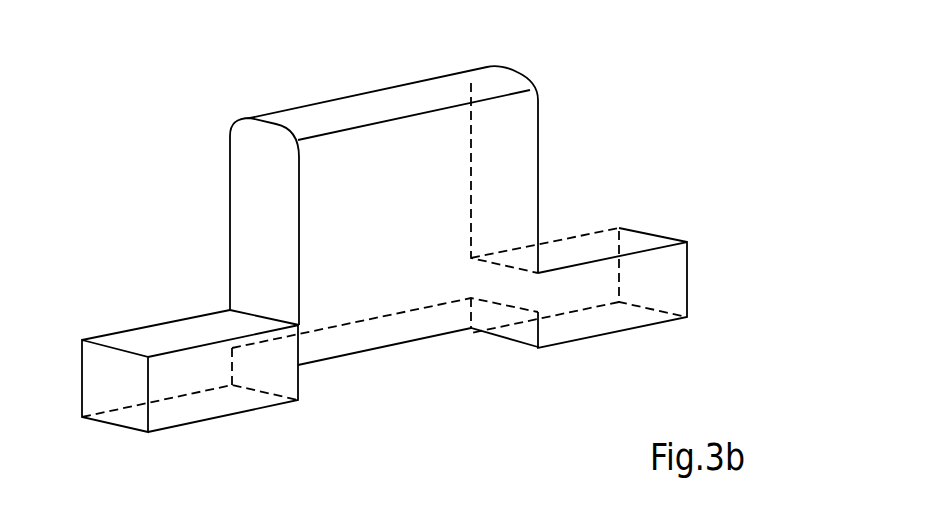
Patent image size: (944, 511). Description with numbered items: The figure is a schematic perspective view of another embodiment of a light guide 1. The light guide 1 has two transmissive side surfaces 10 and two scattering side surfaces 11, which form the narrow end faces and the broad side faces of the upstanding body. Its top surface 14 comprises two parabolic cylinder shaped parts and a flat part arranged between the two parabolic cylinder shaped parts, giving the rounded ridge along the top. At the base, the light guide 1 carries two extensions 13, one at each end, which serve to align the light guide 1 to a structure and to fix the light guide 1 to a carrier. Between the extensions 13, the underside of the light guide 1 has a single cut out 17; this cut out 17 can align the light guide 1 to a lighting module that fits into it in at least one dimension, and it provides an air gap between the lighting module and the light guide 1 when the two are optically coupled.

The light guide 1 is at (95, 45).
The transmissive side surface 10 is at (249, 222).
The scattering side surface 11 is at (216, 164).
The extension 13 is at (143, 316).
The top surface 14 is at (379, 86).
The cut out 17 is at (428, 384).